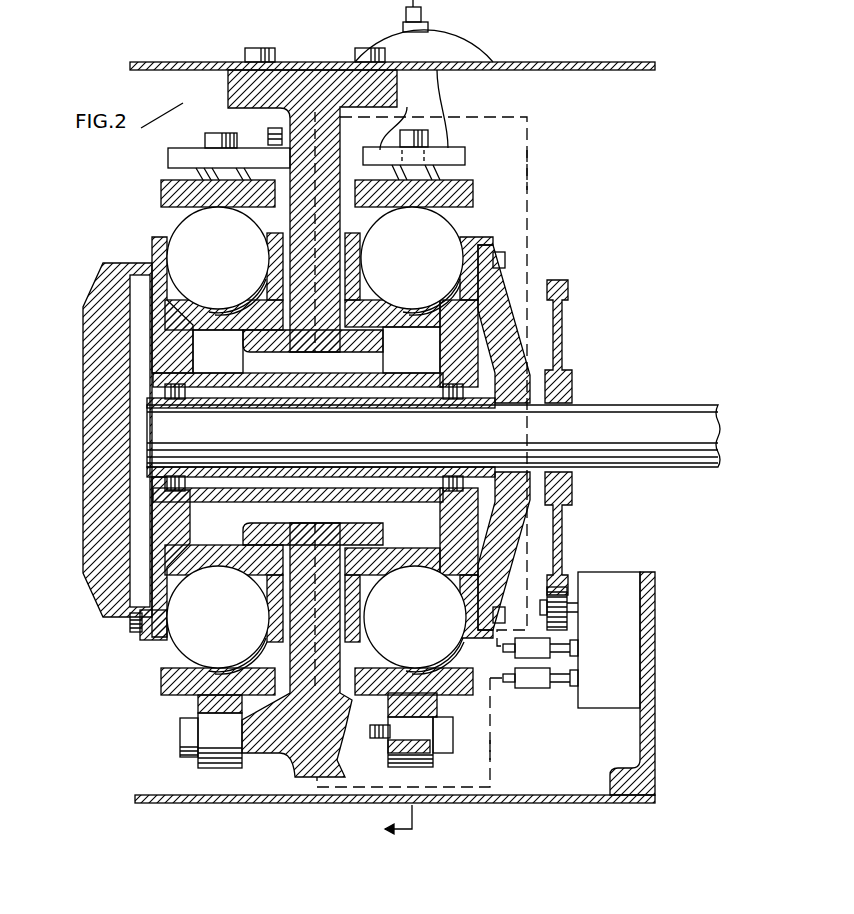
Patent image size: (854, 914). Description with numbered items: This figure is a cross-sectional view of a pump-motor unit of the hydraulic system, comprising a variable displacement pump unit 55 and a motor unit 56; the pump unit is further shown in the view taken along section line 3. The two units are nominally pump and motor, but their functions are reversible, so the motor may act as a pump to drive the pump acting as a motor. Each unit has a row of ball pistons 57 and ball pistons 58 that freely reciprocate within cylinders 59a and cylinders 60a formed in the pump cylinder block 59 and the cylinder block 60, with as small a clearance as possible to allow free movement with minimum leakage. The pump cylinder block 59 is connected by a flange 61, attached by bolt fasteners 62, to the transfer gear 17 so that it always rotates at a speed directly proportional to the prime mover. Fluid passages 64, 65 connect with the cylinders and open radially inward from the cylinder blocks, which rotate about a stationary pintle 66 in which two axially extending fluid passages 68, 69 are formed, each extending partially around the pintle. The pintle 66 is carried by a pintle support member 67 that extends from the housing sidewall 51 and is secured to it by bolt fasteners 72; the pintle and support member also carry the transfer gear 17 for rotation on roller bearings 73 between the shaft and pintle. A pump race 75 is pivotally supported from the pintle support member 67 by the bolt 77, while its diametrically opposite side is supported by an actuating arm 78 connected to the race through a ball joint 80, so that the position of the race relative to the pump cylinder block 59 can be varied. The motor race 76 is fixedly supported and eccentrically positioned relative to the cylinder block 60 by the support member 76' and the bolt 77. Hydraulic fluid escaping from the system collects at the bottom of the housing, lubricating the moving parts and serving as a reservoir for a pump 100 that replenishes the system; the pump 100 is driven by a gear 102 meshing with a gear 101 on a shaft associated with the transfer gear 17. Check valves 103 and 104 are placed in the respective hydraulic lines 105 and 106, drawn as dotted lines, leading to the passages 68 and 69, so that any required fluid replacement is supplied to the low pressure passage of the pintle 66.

The section line 3- 3 is at (388, 6).
The transfer gear 17 is at (637, 418).
The housing sidewall 51 is at (175, 55).
The variable displacement pump unit 55 is at (540, 159).
The motor unit 56 is at (150, 172).
The ball pistons 57 is at (400, 256).
The ball pistons 58 is at (210, 256).
The pump cylinder block 59 is at (470, 242).
The cylinders 59a is at (362, 300).
The cylinder block 60 is at (152, 240).
The cylinders 60a is at (170, 298).
The flange 61 is at (503, 335).
The bolt fasteners 62 is at (507, 262).
The fluid passage 64 is at (407, 327).
The fluid passage 65 is at (217, 333).
The pintle 66 is at (312, 377).
The pintle support member 67 is at (233, 86).
The fluid passage 68 is at (313, 351).
The fluid passage 69 is at (313, 522).
The bolt fasteners 72 is at (357, 53).
The roller bearings 73 is at (176, 400).
The pump race 75 is at (462, 193).
The motor race 76 is at (193, 436).
The support member 76' is at (255, 129).
The bolt 77 is at (188, 757).
The actuating arm 78 is at (390, 140).
The ball joint 80 is at (425, 152).
The pump 100 is at (625, 585).
The gear 101 is at (562, 312).
The gear 102 is at (565, 628).
The check valve 103 is at (530, 650).
The check valve 104 is at (540, 680).
The hydraulic line 105 is at (530, 216).
The hydraulic line 106 is at (490, 747).